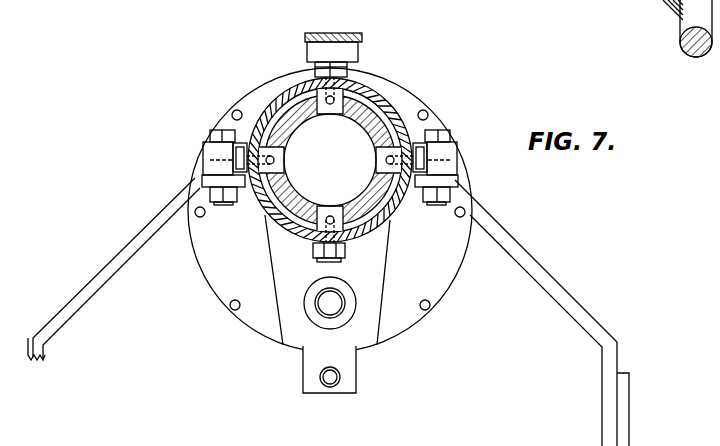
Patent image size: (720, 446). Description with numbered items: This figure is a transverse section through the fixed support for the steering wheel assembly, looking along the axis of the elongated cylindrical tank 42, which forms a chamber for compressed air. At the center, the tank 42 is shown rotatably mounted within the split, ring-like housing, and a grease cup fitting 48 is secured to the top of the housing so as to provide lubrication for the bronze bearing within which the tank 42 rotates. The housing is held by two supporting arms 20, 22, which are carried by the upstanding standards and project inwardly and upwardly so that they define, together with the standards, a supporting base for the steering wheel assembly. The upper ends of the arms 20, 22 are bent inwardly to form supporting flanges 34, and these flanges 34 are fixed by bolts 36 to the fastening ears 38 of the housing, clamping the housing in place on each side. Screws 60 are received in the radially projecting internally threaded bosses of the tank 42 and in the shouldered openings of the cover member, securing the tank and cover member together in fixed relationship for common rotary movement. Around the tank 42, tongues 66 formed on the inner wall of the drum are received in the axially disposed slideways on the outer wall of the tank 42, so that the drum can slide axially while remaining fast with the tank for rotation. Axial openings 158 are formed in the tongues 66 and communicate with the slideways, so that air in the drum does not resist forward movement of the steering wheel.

The supporting arm 20 is at (542, 270).
The supporting arm 22 is at (110, 276).
The supporting flange 34 is at (433, 187).
The bolt 36 is at (438, 135).
The fastening ear 38 is at (443, 152).
The cylindrical tank 42 is at (377, 105).
The grease cup fitting 48 is at (330, 34).
The screw 60 is at (318, 66).
The tongue 66 is at (345, 95).
The axial opening 158 is at (333, 98).